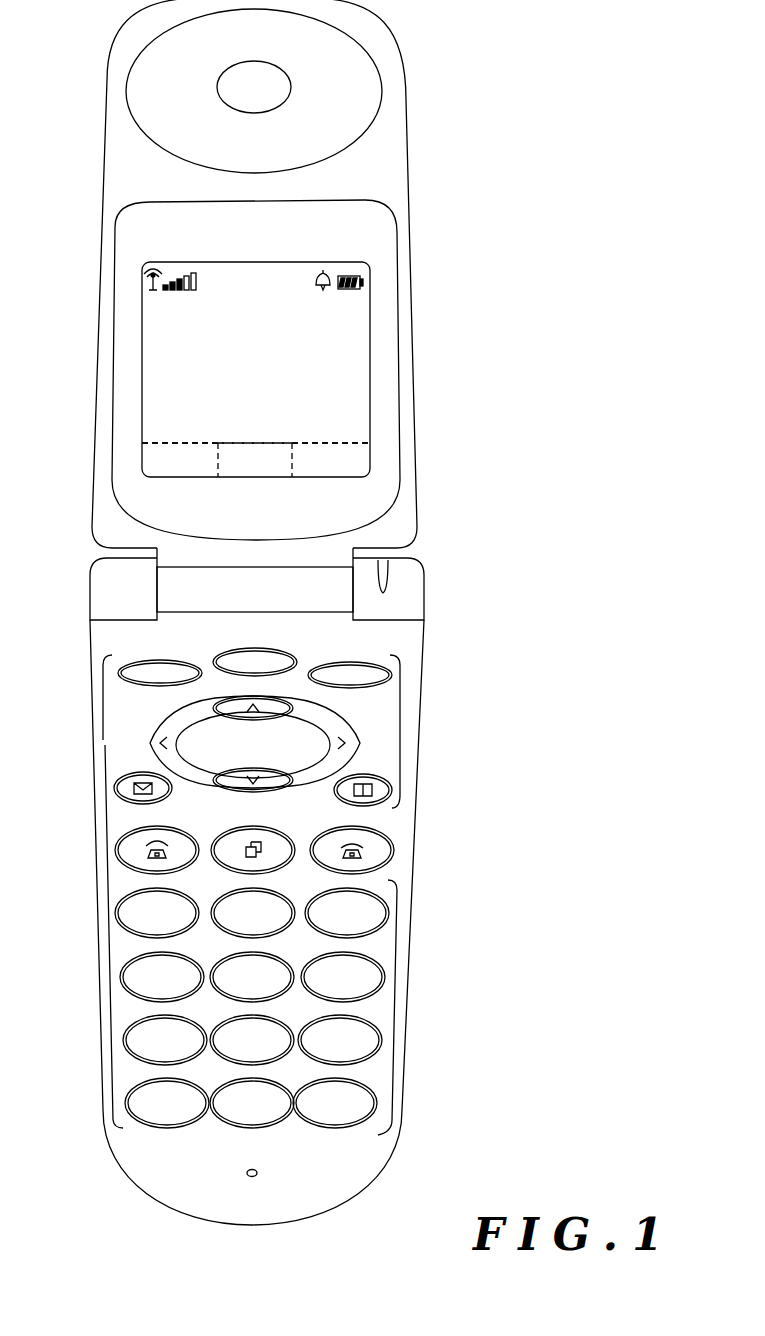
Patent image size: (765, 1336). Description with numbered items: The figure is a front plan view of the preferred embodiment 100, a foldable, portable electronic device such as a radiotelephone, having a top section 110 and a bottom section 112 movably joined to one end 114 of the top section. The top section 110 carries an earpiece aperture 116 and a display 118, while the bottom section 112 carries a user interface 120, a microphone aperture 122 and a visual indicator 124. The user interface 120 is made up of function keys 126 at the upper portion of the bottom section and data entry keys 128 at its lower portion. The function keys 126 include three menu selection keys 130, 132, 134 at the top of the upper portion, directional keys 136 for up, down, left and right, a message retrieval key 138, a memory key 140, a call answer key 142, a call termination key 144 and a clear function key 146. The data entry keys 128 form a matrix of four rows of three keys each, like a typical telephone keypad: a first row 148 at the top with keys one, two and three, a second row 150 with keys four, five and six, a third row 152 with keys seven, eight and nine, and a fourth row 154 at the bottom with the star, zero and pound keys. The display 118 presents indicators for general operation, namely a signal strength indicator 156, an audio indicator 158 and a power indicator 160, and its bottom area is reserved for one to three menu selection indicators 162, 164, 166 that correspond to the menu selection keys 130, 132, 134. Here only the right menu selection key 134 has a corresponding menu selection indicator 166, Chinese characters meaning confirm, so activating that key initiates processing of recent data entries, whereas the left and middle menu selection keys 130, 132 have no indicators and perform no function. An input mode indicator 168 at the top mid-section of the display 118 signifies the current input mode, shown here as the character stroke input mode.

The preferred embodiment 100 is at (477, 1153).
The top section 110 is at (408, 168).
The bottom section 112 is at (91, 690).
The one end of the top section 114 is at (230, 580).
The earpiece aperture 116 is at (250, 70).
The display 118 is at (353, 366).
The user interface 120 is at (103, 743).
The microphone aperture 122 is at (253, 1178).
The visual indicator 124 is at (390, 571).
The function keys 126 is at (400, 730).
The data entry keys 128 is at (397, 968).
The menu selection key 130 is at (160, 668).
The menu selection key 132 is at (265, 660).
The menu selection key 134 is at (345, 672).
The directional keys 136 is at (215, 735).
The message retrieval key 138 is at (128, 786).
The memory key 140 is at (372, 790).
The call answer key 142 is at (130, 845).
The call termination key 144 is at (245, 830).
The clear function key 146 is at (370, 853).
The first row 148 is at (88, 916).
The second row 150 is at (90, 983).
The third row 152 is at (92, 1047).
The fourth row 154 is at (95, 1108).
The signal strength indicator 156 is at (192, 272).
The audio indicator 158 is at (320, 276).
The power indicator 160 is at (363, 283).
The menu selection indicator 162 is at (181, 446).
The menu selection indicator 164 is at (247, 446).
The menu selection indicator 166 is at (308, 446).
The input mode indicator 168 is at (252, 272).